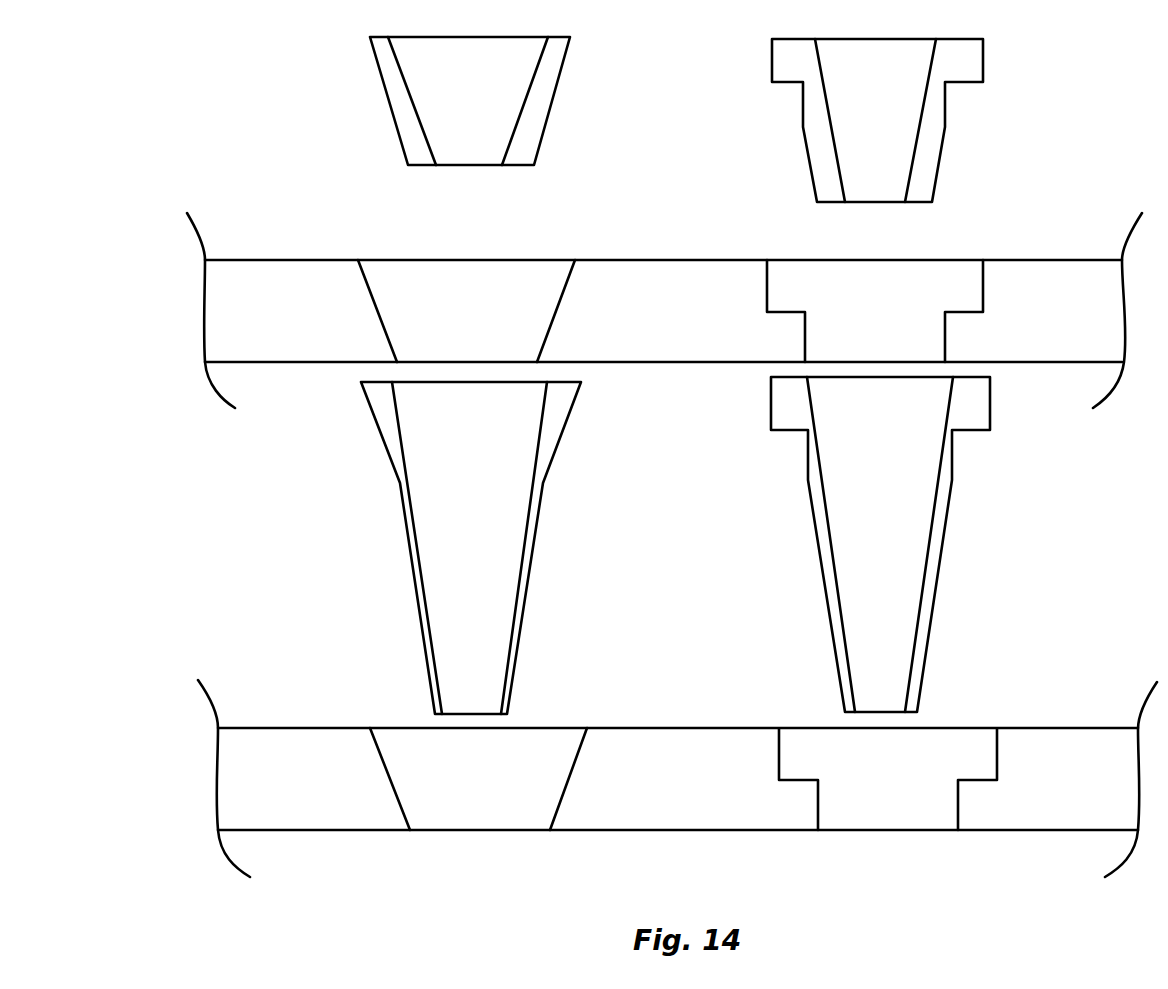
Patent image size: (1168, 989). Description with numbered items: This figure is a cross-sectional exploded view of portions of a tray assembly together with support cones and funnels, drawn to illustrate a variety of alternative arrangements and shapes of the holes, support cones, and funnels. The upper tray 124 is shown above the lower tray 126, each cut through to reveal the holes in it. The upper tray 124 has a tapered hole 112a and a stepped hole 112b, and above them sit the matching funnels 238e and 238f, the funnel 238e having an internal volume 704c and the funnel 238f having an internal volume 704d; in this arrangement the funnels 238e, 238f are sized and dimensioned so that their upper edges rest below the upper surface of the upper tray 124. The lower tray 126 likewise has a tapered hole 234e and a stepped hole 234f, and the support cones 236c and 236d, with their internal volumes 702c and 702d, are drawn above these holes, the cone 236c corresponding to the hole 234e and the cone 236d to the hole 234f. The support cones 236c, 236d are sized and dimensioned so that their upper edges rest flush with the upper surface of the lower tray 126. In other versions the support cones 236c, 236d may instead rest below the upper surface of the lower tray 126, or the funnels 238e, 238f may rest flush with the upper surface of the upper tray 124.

The upper tray 124 is at (298, 250).
The lower tray 126 is at (282, 712).
The hole 112a is at (557, 318).
The hole 112b is at (947, 344).
The hole 234e is at (568, 788).
The hole 234f is at (960, 812).
The support cone 236c is at (533, 552).
The support cone 236d is at (943, 542).
The funnel 238e is at (557, 85).
The funnel 238f is at (947, 106).
The internal volume 702c is at (455, 587).
The internal volume 702d is at (872, 578).
The internal volume 704c is at (428, 100).
The internal volume 704d is at (840, 87).